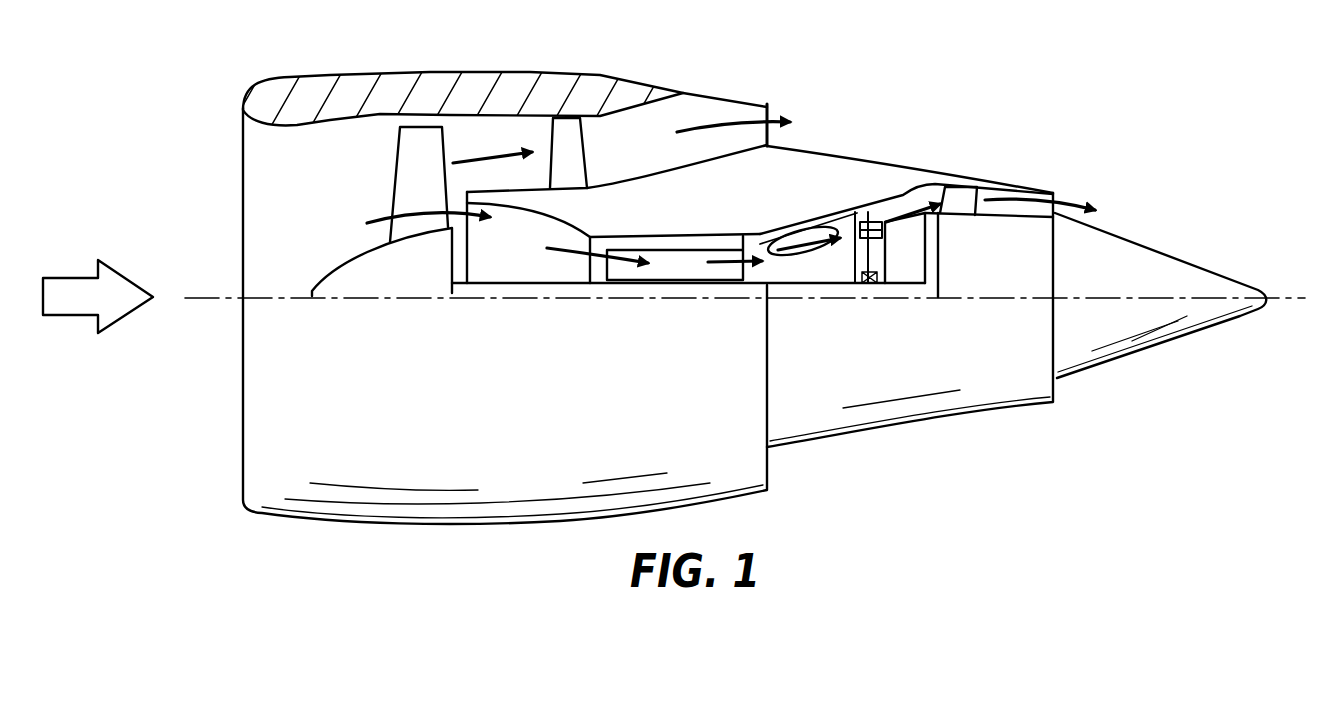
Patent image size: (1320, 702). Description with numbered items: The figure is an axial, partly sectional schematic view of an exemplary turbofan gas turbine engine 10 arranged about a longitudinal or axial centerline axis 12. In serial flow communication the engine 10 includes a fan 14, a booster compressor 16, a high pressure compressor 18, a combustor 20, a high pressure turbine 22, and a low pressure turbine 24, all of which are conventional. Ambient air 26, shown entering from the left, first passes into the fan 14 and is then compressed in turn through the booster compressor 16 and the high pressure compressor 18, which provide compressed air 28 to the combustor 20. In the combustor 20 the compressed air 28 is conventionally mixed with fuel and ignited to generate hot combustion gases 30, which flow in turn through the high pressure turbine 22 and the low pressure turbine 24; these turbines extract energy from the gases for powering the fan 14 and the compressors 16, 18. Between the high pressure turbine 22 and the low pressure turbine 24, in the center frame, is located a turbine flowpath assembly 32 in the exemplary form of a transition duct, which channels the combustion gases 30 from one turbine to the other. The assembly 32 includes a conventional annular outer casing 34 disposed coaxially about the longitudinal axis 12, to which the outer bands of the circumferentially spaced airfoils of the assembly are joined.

The turbofan gas turbine engine 10 is at (952, 160).
The longitudinal centerline axis 12 is at (1183, 298).
The fan 14 is at (395, 176).
The booster compressor 16 is at (532, 265).
The high pressure compressor 18 is at (696, 272).
The combustor 20 is at (792, 229).
The high pressure turbine 22 is at (858, 208).
The low pressure turbine 24 is at (900, 200).
The ambient air 26 is at (63, 278).
The compressed air 28 is at (727, 250).
The combustion gases 30 is at (836, 270).
The turbine flowpath assembly 32 is at (874, 270).
The annular outer casing 34 is at (826, 214).